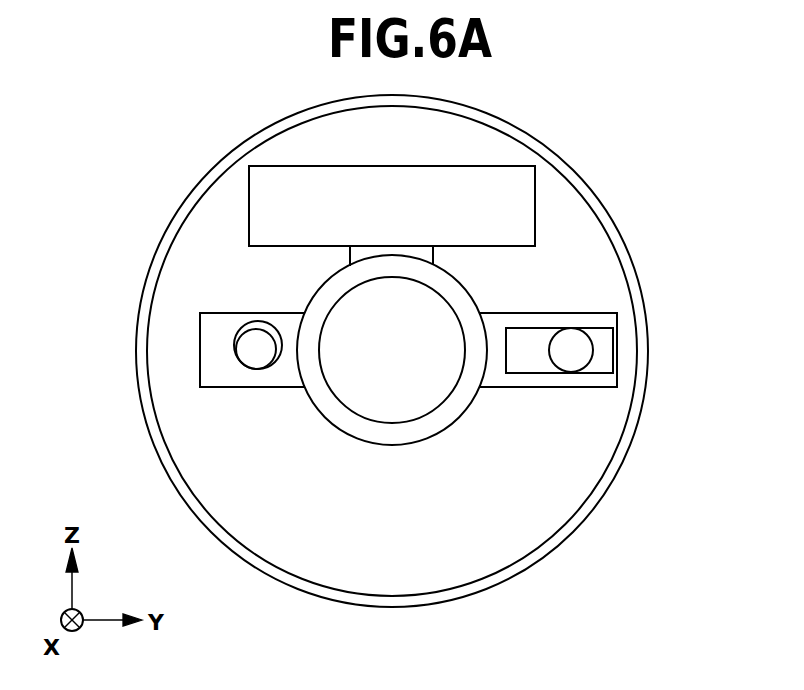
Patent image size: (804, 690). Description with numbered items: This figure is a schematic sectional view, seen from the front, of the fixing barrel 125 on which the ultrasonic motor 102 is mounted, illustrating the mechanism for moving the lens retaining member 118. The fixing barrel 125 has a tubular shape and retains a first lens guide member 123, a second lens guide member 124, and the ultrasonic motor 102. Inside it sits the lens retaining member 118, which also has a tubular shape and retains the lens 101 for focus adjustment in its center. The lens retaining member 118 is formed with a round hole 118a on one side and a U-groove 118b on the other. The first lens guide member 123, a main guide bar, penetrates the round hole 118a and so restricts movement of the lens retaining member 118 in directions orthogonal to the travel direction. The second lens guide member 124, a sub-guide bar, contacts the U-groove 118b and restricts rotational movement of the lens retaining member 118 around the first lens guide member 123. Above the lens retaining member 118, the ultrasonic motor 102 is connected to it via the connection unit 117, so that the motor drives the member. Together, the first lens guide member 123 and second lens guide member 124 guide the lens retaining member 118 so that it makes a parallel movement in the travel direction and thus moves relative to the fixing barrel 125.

The lens 101 is at (438, 392).
The ultrasonic motor 102 is at (520, 203).
The connection unit 117 is at (432, 262).
The lens retaining member 118 is at (430, 428).
The round hole 118a is at (233, 340).
The U-groove 118b is at (617, 378).
The first lens guide member 123 is at (250, 353).
The second lens guide member 124 is at (582, 347).
The fixing barrel 125 is at (612, 228).